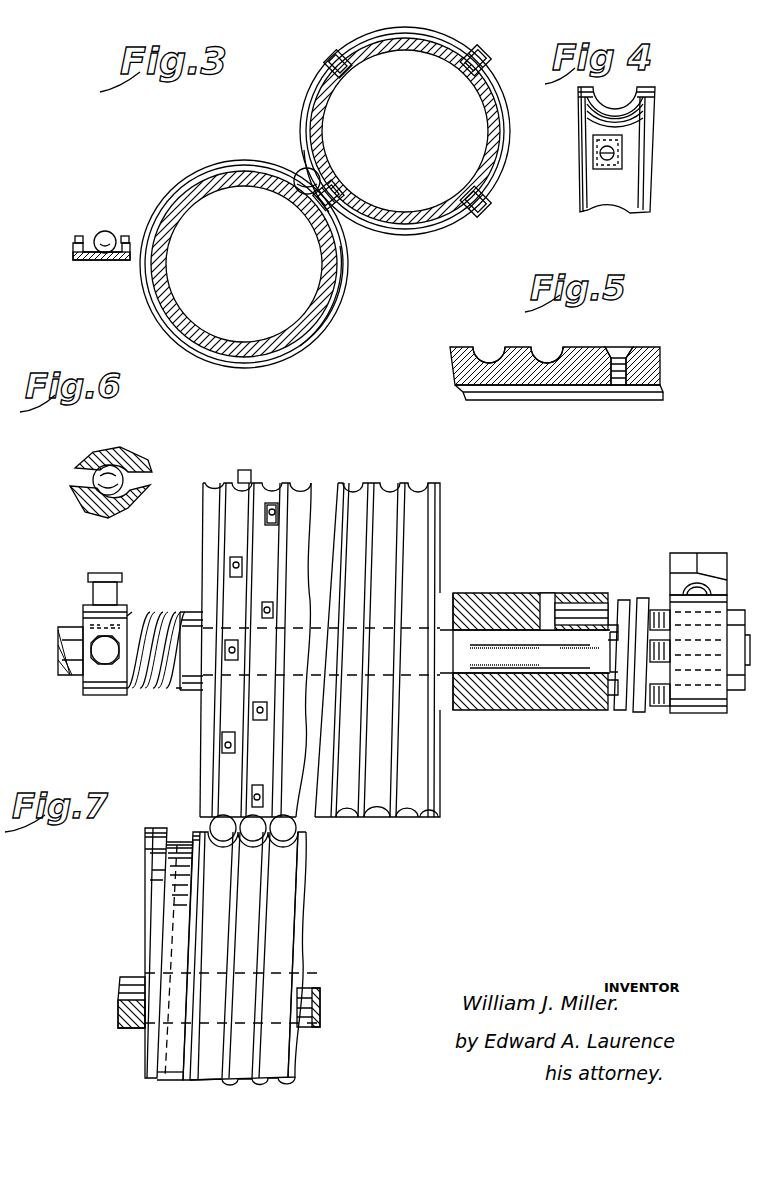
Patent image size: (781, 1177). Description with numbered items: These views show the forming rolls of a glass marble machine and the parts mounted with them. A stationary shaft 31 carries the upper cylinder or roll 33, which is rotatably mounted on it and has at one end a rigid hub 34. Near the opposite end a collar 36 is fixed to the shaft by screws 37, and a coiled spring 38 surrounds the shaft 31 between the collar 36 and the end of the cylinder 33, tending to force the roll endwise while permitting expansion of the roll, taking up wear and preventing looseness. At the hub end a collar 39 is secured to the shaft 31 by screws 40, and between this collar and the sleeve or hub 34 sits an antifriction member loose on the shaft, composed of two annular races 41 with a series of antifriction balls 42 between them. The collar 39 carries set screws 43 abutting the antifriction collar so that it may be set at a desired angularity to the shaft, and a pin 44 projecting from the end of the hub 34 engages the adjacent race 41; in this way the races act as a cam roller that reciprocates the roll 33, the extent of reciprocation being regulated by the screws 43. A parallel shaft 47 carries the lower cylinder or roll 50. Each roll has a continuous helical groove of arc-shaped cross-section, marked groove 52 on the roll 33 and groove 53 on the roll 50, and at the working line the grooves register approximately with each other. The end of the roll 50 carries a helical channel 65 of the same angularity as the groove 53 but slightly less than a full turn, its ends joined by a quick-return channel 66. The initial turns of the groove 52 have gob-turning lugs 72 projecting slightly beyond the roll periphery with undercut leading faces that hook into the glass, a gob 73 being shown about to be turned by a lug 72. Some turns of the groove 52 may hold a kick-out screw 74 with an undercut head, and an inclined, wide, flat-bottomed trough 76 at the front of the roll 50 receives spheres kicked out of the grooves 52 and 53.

In FIG. 6, the stationary shaft 31 is at (50, 651).
In FIG. 3, the cylinder or roll 33 is at (500, 110).
In FIG. 4, the cylinder or roll 33 is at (578, 107).
In FIG. 5, the cylinder or roll 33 is at (450, 372).
In FIG. 6, the cylinder or roll 33 is at (118, 458).
In FIG. 6, the hub 34 is at (478, 593).
In FIG. 6, the collar 36 is at (89, 634).
In FIG. 6, the screws 37 is at (96, 664).
In FIG. 6, the coiled spring 38 is at (150, 610).
In FIG. 6, the collar 39 is at (728, 595).
In FIG. 6, the screws 40 is at (682, 553).
In FIG. 6, the annular races 41 is at (628, 600).
In FIG. 6, the antifriction balls 42 is at (622, 708).
In FIG. 6, the set screws 43 is at (657, 706).
In FIG. 6, the pin 44 is at (578, 603).
In FIG. 7, the shaft 47 is at (122, 977).
In FIG. 3, the cylinder or roll 50 is at (244, 264).
In FIG. 6, the cylinder or roll 50 is at (92, 514).
In FIG. 7, the cylinder or roll 50 is at (245, 950).
In FIG. 3, the helical groove 52 is at (496, 128).
In FIG. 4, the helical groove 52 is at (603, 118).
In FIG. 5, the helical groove 52 is at (550, 352).
In FIG. 6, the helical groove 52 is at (350, 483).
In FIG. 3, the helical groove 53 is at (347, 236).
In FIG. 7, the helical groove 53 is at (283, 918).
In FIG. 7, the helical channel 65 is at (180, 842).
In FIG. 7, the quick-return channel 66 is at (172, 950).
In FIG. 3, the gob-turning lugs 72 is at (331, 84).
In FIG. 4, the gob-turning lugs 72 is at (593, 156).
In FIG. 6, the gob-turning lugs 72 is at (244, 470).
In FIG. 3, the gob 73 is at (299, 170).
In FIG. 6, the gob 73 is at (93, 476).
In FIG. 5, the kick-out screw 74 is at (620, 347).
In FIG. 3, the trough 76 is at (74, 258).